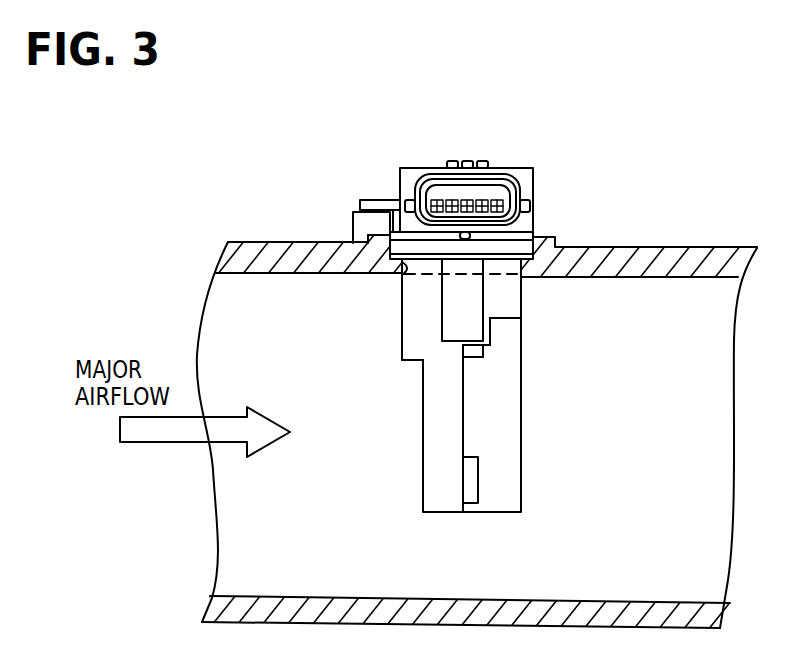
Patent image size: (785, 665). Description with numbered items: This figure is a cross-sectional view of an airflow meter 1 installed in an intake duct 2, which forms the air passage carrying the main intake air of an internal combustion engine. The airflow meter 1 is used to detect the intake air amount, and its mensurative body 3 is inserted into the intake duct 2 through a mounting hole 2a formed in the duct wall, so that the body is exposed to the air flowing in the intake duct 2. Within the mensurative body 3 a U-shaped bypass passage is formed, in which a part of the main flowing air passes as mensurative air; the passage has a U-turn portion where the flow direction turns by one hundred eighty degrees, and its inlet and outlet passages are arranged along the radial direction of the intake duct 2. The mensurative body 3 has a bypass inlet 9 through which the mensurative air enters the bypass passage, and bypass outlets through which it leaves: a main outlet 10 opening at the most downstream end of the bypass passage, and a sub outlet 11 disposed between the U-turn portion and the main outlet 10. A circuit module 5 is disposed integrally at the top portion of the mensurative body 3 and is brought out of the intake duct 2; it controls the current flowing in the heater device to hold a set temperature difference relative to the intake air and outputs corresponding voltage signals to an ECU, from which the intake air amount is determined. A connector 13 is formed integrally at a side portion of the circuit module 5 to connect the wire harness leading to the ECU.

The airflow meter 1 is at (570, 190).
The intake duct 2 is at (680, 249).
The mounting hole 2a is at (405, 272).
The mensurative body 3 is at (522, 452).
The circuit module 5 is at (525, 177).
The bypass inlet 9 is at (417, 422).
The main outlet 10 is at (471, 495).
The sub outlet 11 is at (482, 352).
The connector 13 is at (425, 177).